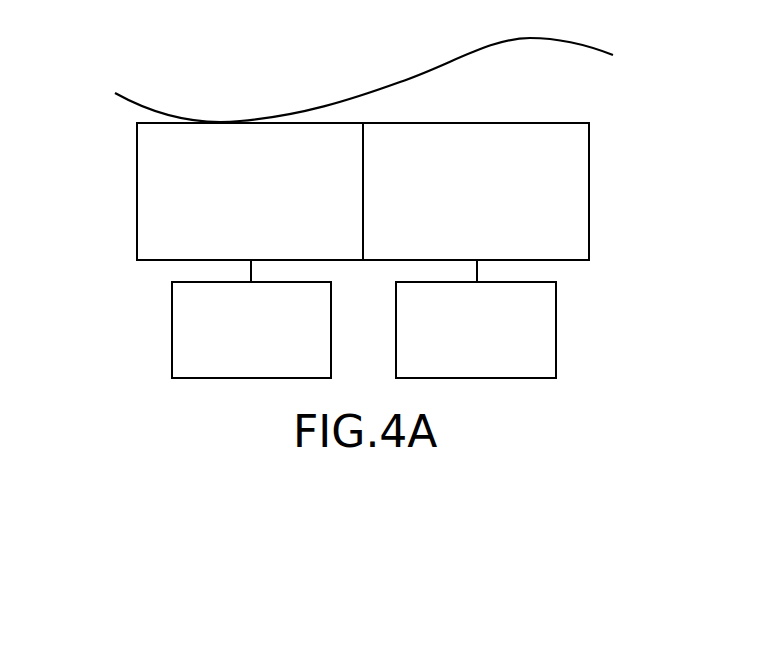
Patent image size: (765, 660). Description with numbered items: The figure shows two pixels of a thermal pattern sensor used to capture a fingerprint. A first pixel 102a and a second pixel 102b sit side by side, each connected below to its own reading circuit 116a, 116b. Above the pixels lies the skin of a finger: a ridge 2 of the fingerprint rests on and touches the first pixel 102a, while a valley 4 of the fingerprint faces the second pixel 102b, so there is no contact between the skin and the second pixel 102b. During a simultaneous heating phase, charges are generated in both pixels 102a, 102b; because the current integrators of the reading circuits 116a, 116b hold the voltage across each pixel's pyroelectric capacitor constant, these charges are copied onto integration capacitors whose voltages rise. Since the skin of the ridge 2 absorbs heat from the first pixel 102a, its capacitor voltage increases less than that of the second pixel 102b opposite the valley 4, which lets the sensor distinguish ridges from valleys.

The ridge 2 is at (243, 113).
The valley 4 is at (526, 65).
The first pixel 102a is at (148, 165).
The second pixel 102b is at (580, 180).
The reading circuit 116a is at (181, 316).
The reading circuit 116b is at (545, 338).